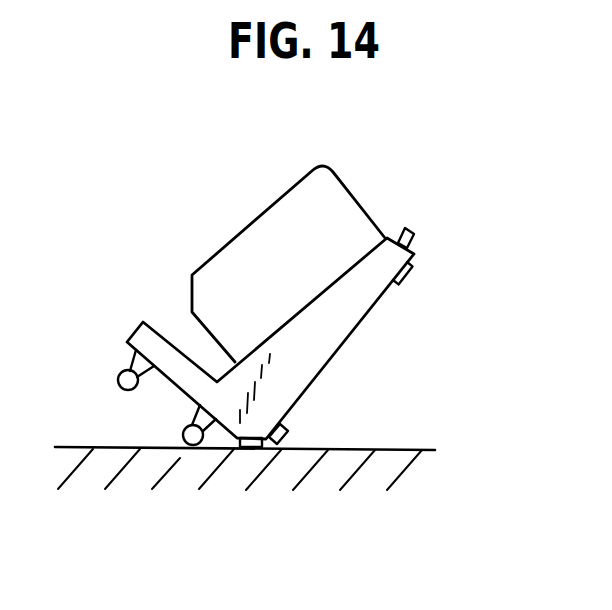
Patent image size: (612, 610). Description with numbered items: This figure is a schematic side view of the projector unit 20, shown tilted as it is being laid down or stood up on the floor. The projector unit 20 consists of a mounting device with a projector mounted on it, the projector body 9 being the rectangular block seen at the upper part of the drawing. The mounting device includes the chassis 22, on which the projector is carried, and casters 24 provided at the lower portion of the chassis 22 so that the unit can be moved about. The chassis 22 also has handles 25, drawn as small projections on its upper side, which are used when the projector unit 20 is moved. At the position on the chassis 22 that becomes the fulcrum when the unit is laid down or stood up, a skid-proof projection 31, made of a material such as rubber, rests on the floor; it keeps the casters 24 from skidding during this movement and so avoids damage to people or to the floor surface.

The projector unit 20 is at (229, 228).
The display panel 9 is at (302, 212).
The chassis 22 is at (318, 333).
The handle 25 is at (413, 240).
The roller wheel 24 is at (189, 446).
The foot 31 is at (247, 452).